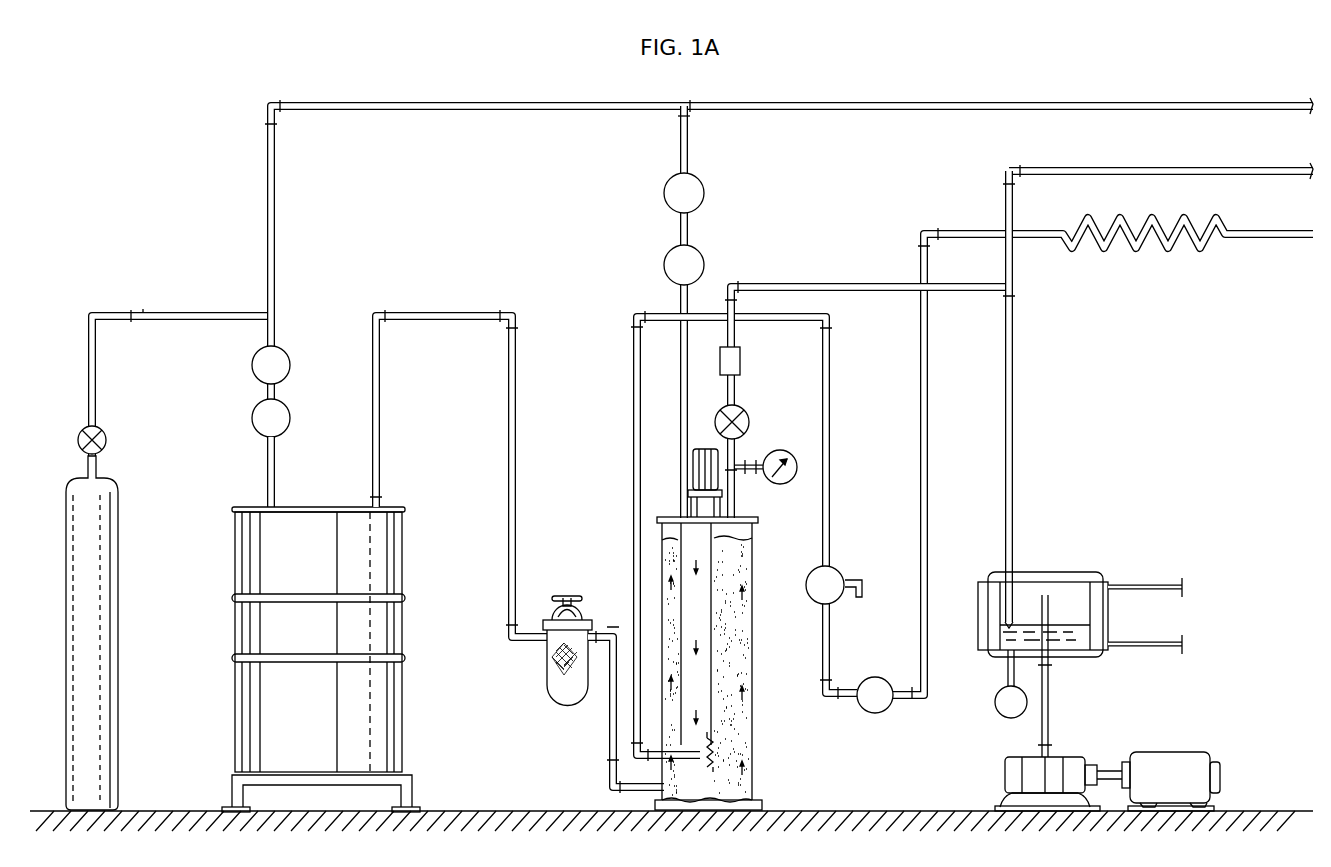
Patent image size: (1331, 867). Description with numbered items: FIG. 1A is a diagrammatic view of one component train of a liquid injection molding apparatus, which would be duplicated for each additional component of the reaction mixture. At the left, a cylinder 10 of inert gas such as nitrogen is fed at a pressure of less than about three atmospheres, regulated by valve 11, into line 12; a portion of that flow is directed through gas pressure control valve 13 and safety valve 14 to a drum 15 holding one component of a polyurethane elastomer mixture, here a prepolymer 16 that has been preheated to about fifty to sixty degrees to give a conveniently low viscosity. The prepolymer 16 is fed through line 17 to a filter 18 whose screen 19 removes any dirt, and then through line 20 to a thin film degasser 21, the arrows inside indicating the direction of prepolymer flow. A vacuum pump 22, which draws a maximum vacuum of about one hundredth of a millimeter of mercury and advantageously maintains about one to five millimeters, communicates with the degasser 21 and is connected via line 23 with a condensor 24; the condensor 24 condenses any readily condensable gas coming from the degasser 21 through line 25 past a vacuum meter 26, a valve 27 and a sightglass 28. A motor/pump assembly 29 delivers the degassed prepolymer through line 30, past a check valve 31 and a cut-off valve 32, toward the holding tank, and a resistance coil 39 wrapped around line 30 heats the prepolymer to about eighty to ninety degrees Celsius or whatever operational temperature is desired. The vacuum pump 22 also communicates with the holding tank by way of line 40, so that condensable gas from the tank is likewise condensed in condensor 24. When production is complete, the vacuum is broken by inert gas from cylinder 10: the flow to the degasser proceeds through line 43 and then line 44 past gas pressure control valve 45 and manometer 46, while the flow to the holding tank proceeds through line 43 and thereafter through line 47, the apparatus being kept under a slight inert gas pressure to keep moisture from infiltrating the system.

The cylinder 10 is at (118, 545).
The valve 11 is at (103, 437).
The line 12 is at (129, 316).
The gas pressure control valve 13 is at (290, 365).
The safety valve 14 is at (283, 418).
The drum 15 is at (276, 504).
The prepolymer 16 is at (327, 560).
The line 17 is at (380, 398).
The filter 18 is at (563, 597).
The screen 19 is at (547, 676).
The line 20 is at (613, 735).
The thin film degasser 21 is at (735, 716).
The vacuum pump 22 is at (1075, 757).
The line 23 is at (1049, 700).
The condensor 24 is at (1035, 572).
The line 25 is at (1014, 396).
The vacuum meter 26 is at (779, 484).
The valve 27 is at (749, 423).
The sightglass 28 is at (741, 366).
The motor/pump assembly 29 is at (694, 462).
The line 30 is at (637, 495).
The check valve 31 is at (835, 571).
The cut-off valve 32 is at (874, 713).
The resistance coil 39 is at (1148, 226).
The line 40 is at (1200, 171).
The line 43 is at (403, 106).
The line 44 is at (689, 153).
The gas pressure control valve 45 is at (704, 193).
The manometer 46 is at (704, 258).
The line 47 is at (1088, 106).